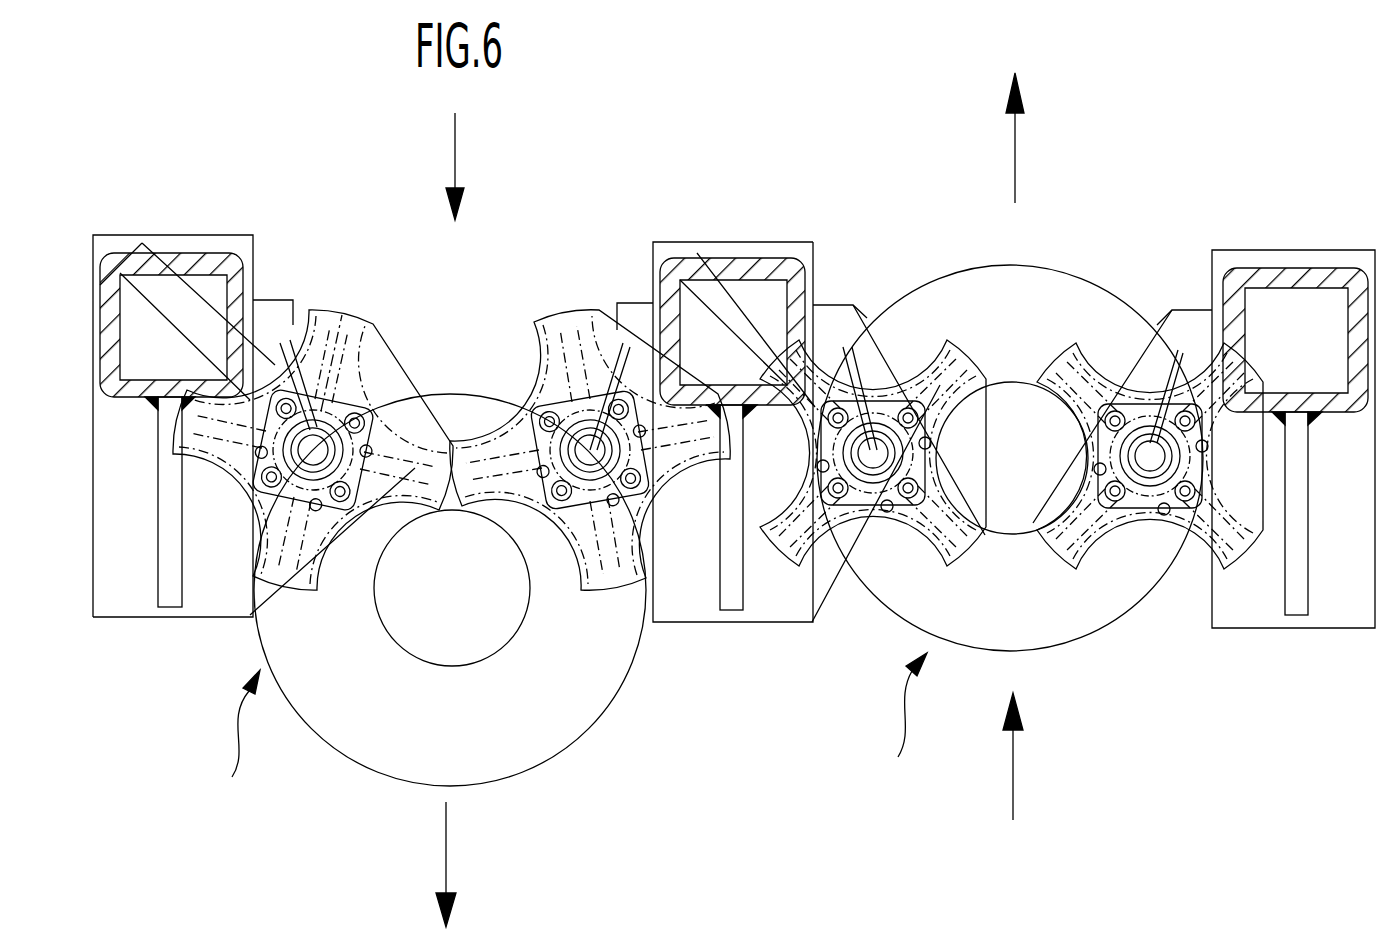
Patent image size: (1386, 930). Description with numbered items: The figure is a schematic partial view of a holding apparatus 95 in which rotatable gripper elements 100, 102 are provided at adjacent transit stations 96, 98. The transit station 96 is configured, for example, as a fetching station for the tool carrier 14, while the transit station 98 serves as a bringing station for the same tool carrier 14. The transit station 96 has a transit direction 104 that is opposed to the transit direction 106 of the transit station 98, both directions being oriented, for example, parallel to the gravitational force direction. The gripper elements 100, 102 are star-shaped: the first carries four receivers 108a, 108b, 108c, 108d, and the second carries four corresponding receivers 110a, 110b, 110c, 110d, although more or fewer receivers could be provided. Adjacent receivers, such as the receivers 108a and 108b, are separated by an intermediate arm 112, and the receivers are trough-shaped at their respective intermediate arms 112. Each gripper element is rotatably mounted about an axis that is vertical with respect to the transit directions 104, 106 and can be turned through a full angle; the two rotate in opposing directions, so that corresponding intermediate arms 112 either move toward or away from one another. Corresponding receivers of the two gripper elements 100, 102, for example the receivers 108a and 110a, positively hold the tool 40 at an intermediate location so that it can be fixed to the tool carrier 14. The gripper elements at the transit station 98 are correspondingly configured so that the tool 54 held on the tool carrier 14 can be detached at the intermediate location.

The tool carrier 14 is at (562, 718).
The tool 40 is at (450, 655).
The tool 54 is at (1017, 417).
The transport direction 95 is at (762, 193).
The transit station 96 is at (236, 743).
The transit station 98 is at (904, 726).
The gripper element 100 is at (348, 321).
The gripper element 102 is at (587, 353).
The transit direction 104 is at (446, 833).
The transit direction 106 is at (1013, 770).
The receiver 108a is at (363, 363).
The receiver 108b is at (313, 352).
The receiver 108c is at (223, 457).
The receiver 108d is at (327, 537).
The receiver 110a is at (530, 363).
The receiver 110b is at (622, 335).
The receiver 110c is at (678, 543).
The receiver 110d is at (563, 568).
The intermediate arm 112 is at (357, 355).